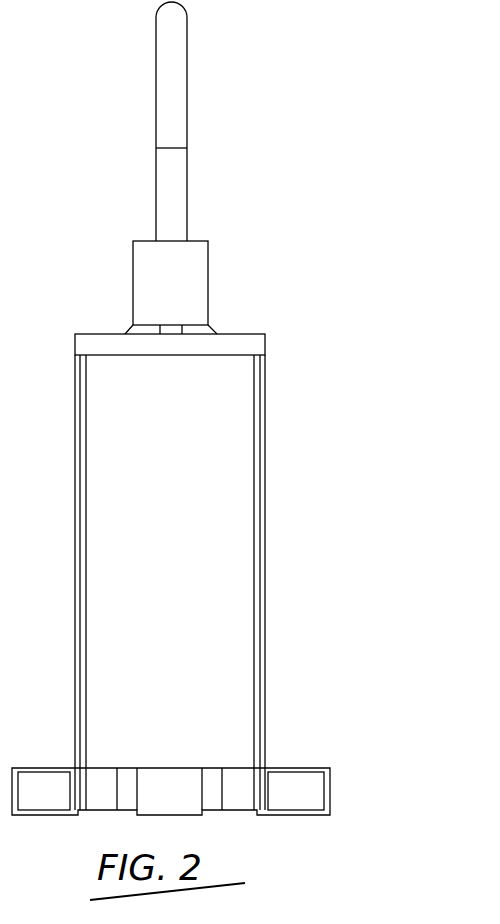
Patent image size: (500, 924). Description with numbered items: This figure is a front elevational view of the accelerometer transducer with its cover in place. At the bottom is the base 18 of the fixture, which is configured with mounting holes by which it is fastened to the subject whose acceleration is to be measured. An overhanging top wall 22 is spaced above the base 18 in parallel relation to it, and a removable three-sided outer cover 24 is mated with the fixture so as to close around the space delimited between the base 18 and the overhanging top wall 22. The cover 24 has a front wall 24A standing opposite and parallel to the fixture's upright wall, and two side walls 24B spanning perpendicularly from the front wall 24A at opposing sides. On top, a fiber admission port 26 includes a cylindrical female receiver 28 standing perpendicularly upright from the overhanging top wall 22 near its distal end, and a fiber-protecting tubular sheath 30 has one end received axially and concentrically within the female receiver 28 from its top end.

The base 18 is at (100, 800).
The overhanging top wall 22 is at (227, 345).
The outer cover 24 is at (168, 582).
The front wall 24A is at (240, 550).
The side walls 24B is at (73, 512).
The fiber admission port 26 is at (183, 285).
The cylindrical female receiver 28 is at (153, 272).
The fiber-protecting tubular sheath 30 is at (178, 178).